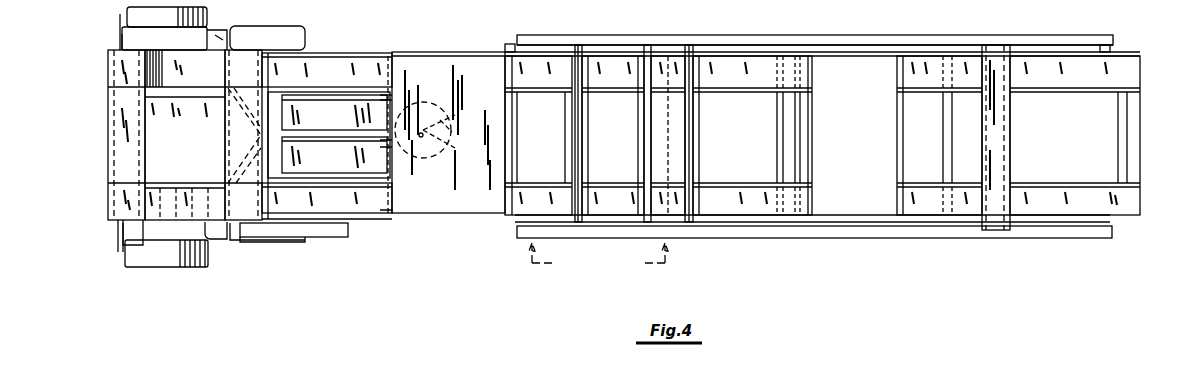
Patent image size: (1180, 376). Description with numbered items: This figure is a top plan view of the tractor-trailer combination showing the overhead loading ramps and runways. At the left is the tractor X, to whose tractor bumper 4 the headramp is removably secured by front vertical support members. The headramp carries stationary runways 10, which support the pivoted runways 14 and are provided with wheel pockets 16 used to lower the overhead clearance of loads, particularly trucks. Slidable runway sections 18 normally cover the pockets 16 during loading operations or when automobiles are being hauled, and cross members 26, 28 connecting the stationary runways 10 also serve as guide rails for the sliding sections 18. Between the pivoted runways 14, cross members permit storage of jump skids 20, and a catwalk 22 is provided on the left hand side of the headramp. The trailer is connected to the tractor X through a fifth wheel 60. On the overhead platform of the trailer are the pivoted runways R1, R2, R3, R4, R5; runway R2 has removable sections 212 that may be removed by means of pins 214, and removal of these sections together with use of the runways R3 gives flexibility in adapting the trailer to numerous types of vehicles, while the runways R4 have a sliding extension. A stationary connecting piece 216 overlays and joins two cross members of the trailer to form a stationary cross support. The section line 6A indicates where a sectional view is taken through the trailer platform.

The tractor bumper 4 is at (118, 246).
The stationary runways 10 is at (117, 48).
The pivoted runways 14 is at (327, 136).
The wheel pockets 16 is at (187, 62).
The slidable runway sections 18 is at (168, 114).
The jump skids 20 is at (329, 135).
The catwalk 22 is at (341, 228).
The cross member 26 is at (114, 155).
The cross member 28 is at (243, 135).
The fifth wheel 60 is at (440, 168).
The removable sections 212 is at (664, 190).
The pins 214 is at (676, 72).
The stationary connecting piece 216 is at (1007, 140).
The pivoted runway R1 is at (540, 80).
The pivoted runway R2 is at (608, 80).
The pivoted runway R3 is at (740, 80).
The pivoted runway R4 is at (925, 80).
The pivoted runway R5 is at (1100, 80).
The tractor X is at (290, 240).
The section line 6A is at (596, 268).